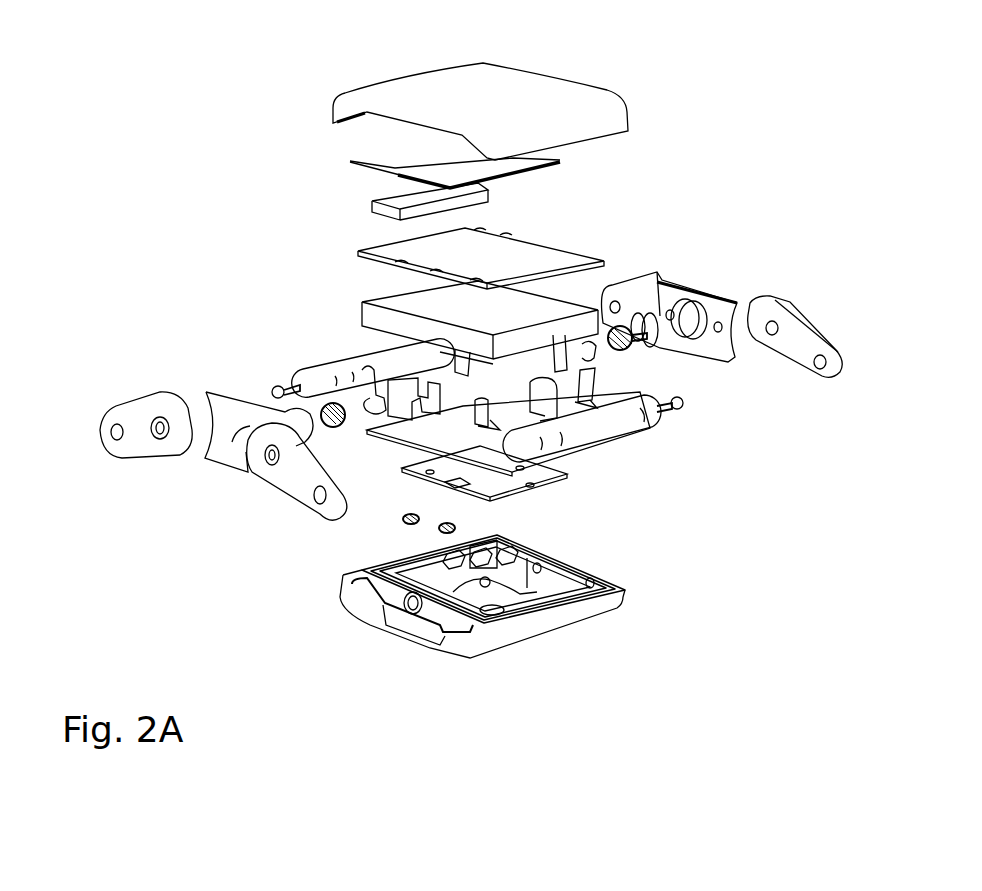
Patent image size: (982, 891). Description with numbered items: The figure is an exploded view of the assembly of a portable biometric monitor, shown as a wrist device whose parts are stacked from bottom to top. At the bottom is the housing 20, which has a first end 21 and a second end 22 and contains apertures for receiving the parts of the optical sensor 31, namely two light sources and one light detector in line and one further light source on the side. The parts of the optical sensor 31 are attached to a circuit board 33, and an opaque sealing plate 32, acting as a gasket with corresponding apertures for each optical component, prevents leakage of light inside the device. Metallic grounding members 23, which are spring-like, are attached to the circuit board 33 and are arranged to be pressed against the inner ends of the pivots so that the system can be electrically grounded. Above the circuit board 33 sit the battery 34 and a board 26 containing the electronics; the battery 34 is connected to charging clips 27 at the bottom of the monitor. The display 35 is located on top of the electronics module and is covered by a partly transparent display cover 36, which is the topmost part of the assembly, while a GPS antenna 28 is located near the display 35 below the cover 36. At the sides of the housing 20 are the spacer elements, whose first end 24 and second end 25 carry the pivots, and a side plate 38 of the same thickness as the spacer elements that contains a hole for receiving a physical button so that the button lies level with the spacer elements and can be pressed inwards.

The housing 20 is at (363, 610).
The first end 21 is at (553, 622).
The second end 22 is at (336, 582).
The metallic grounding members 23 is at (590, 393).
The first end of the spacer elements 24 is at (100, 432).
The second end of the spacer elements 25 is at (184, 446).
The board containing the electronics 26 is at (358, 253).
The charging clips 27 is at (440, 531).
The GPS antenna 28 is at (372, 204).
The optical sensor 31 is at (512, 540).
The sealing plate 32 is at (446, 480).
The circuit board 33 is at (404, 450).
The battery 34 is at (362, 310).
The display 35 is at (562, 164).
The display cover 36 is at (335, 117).
The side plate 38 is at (700, 305).